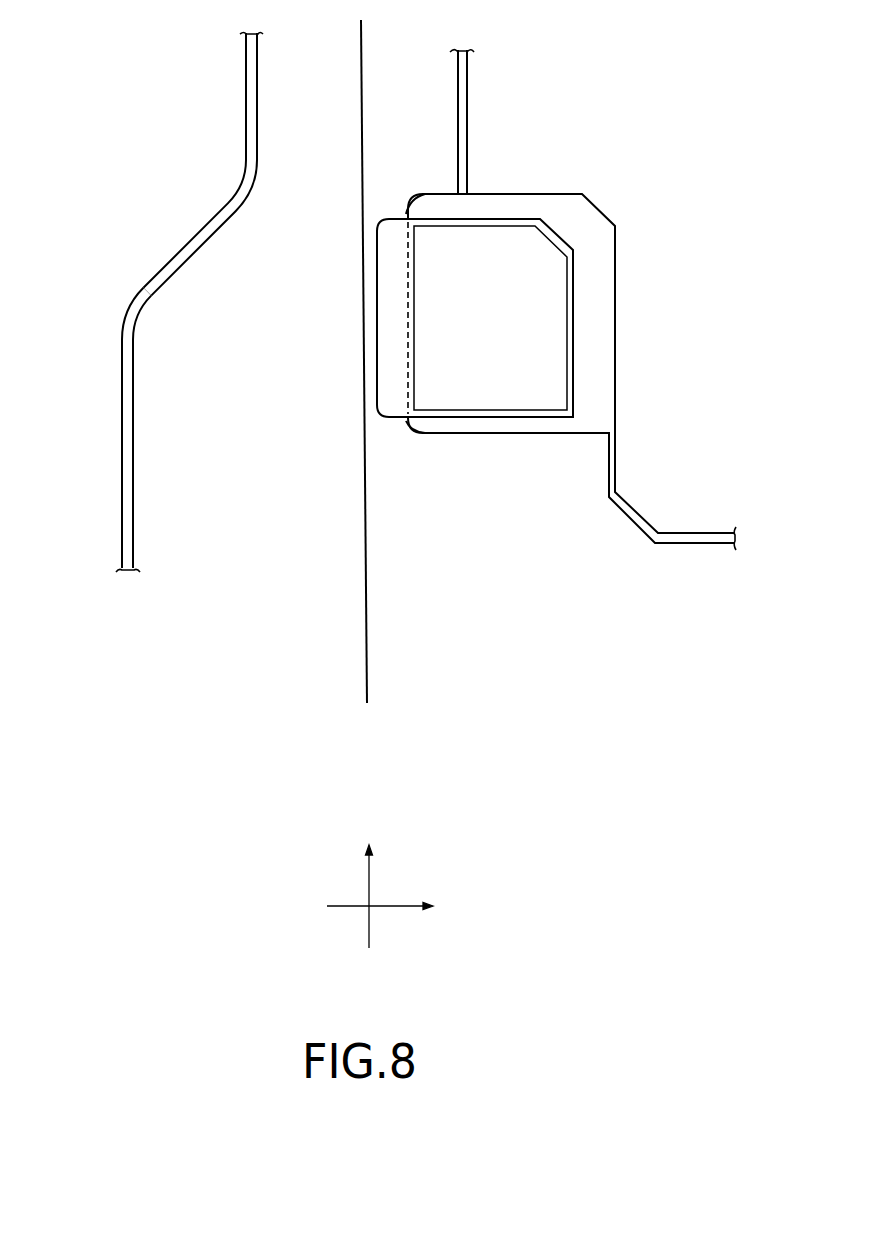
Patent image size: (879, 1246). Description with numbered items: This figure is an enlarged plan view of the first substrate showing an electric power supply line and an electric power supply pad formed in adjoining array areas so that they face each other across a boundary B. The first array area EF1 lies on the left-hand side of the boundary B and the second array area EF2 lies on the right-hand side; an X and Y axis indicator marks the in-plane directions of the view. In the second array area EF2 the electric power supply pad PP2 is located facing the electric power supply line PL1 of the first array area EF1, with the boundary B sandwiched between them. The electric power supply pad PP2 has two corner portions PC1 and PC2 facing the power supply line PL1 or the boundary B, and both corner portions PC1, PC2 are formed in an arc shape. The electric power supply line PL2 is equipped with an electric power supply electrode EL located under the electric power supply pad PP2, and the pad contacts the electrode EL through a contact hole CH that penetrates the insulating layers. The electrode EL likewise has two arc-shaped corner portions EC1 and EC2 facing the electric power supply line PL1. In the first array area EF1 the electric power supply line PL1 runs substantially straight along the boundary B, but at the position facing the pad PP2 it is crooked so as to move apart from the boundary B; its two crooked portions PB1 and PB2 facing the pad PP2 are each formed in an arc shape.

The boundary B is at (361, 44).
The electric power supply line PL1 is at (244, 50).
The crooked portion PB1 is at (256, 206).
The crooked portion PB2 is at (116, 308).
The electric power supply line PL2 is at (468, 93).
The electric power supply electrode EL is at (617, 253).
The corner portion PC2 is at (372, 214).
The corner portion PC1 is at (373, 423).
The contact hole CH is at (567, 341).
The corner portion EC2 is at (408, 188).
The corner portion EC1 is at (411, 442).
The electric power supply pad PP2 is at (505, 418).
The first array area EF1 is at (298, 682).
The second array area EF2 is at (437, 682).
The X axis direction X is at (390, 907).
The Y axis direction Y is at (369, 880).